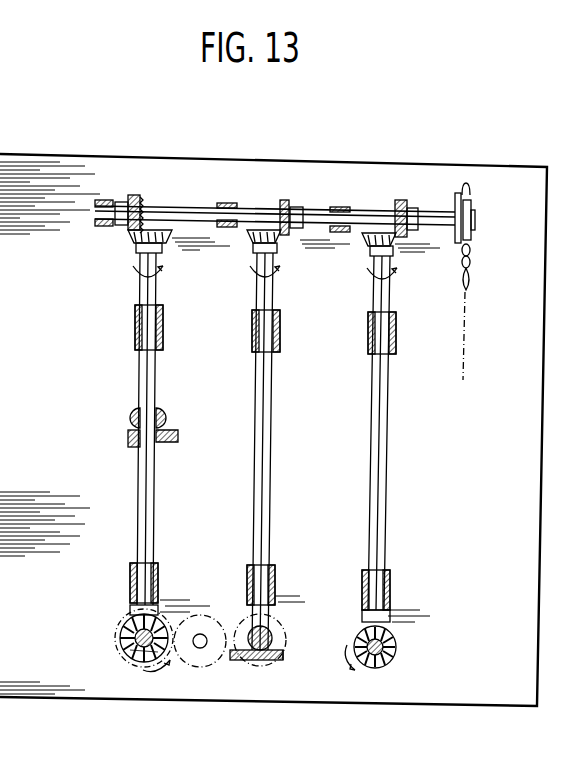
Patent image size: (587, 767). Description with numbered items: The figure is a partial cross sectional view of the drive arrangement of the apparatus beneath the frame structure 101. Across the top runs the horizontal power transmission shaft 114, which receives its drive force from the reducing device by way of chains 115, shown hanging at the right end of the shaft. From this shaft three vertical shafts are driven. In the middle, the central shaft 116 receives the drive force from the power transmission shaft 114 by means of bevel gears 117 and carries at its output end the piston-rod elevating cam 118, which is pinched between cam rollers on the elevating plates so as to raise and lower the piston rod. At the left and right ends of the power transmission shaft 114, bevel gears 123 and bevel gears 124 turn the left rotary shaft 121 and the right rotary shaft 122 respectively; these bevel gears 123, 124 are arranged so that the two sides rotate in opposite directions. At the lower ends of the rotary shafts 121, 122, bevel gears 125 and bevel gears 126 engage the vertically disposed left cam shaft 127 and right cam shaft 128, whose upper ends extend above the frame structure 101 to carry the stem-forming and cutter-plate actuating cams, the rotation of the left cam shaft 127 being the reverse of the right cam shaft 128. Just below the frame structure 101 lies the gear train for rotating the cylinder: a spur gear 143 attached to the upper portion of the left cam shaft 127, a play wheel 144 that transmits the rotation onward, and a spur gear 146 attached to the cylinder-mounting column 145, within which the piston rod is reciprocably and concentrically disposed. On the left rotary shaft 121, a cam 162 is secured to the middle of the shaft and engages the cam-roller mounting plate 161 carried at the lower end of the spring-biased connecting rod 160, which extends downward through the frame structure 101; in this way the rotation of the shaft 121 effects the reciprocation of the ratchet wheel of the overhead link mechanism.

The frame structure 101 is at (455, 690).
The power transmission shaft 114 is at (358, 215).
The chains 115 is at (465, 298).
The central shaft 116 is at (277, 482).
The bevel gears 117 is at (283, 200).
The piston-rod elevating cam 118 is at (260, 662).
The left rotary shaft 121 is at (160, 482).
The right rotary shaft 122 is at (392, 482).
The bevel gears 123 is at (138, 193).
The bevel gears 124 is at (400, 200).
The bevel gears 125 is at (128, 625).
The bevel gears 126 is at (386, 628).
The left cam shaft 127 is at (122, 648).
The right cam shaft 128 is at (372, 670).
The spur gear 143 is at (140, 667).
The disc 144 is at (205, 668).
The cylinder-mounting column 145 is at (280, 642).
The spur gear 146 is at (288, 655).
The spring-biased connecting rod 160 is at (137, 408).
The cam-roller mounting plate 161 is at (128, 420).
The cam 162 is at (175, 432).